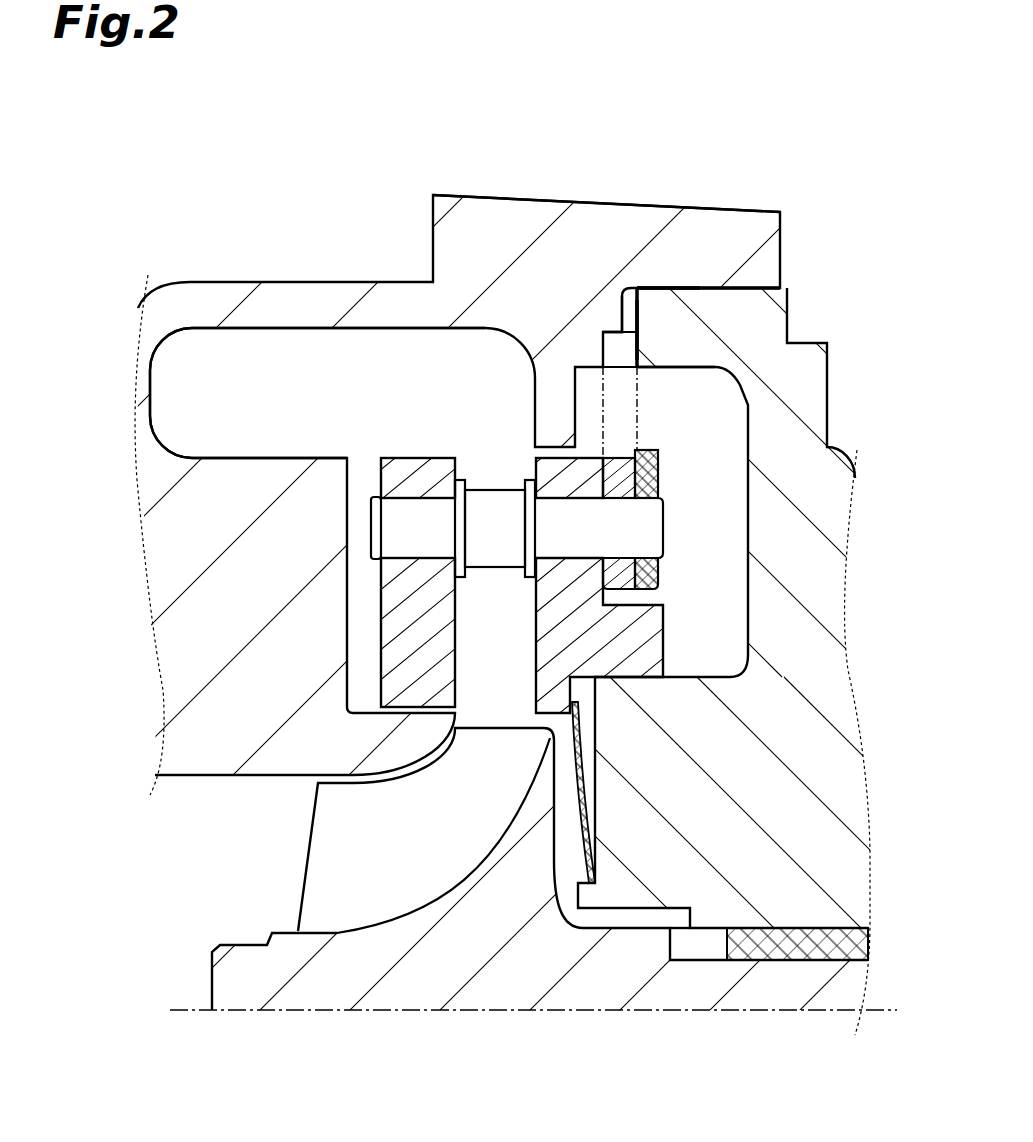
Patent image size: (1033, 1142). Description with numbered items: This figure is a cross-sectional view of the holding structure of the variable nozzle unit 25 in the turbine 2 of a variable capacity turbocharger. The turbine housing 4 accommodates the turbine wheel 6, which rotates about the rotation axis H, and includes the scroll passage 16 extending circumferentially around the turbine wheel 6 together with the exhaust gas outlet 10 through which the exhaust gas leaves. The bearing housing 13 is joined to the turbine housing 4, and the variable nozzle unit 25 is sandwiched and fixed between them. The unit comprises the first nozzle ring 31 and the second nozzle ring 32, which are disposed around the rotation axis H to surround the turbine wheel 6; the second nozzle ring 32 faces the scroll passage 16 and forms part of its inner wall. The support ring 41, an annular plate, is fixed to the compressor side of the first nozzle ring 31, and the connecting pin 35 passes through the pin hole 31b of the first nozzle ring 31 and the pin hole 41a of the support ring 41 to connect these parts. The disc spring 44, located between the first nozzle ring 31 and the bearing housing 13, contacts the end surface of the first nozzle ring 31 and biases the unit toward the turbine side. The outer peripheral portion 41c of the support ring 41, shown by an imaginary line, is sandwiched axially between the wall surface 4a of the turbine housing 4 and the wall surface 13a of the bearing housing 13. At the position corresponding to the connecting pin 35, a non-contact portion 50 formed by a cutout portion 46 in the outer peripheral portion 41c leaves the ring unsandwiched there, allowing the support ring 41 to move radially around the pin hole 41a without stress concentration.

The turbine 2 is at (287, 188).
The turbine housing 4 is at (243, 281).
The wall surface 4a is at (621, 330).
The turbine wheel 6 is at (212, 975).
The exhaust gas outlet 10 is at (224, 853).
The bearing housing 13 is at (831, 366).
The wall surface 13a is at (626, 295).
The scroll passage 16 is at (276, 404).
The variable nozzle unit 25 is at (493, 470).
The first nozzle ring 31 is at (554, 455).
The pin hole 31b is at (590, 558).
The second nozzle ring 32 is at (410, 457).
The connecting pin 35 is at (364, 523).
The support ring 41 is at (623, 590).
The pin hole 41a is at (620, 500).
The outer peripheral portion 41c is at (598, 393).
The disc spring 44 is at (580, 762).
The cutout portion 46 is at (620, 407).
The non-contact portion 50 is at (652, 350).
The rotation axis H is at (875, 1013).